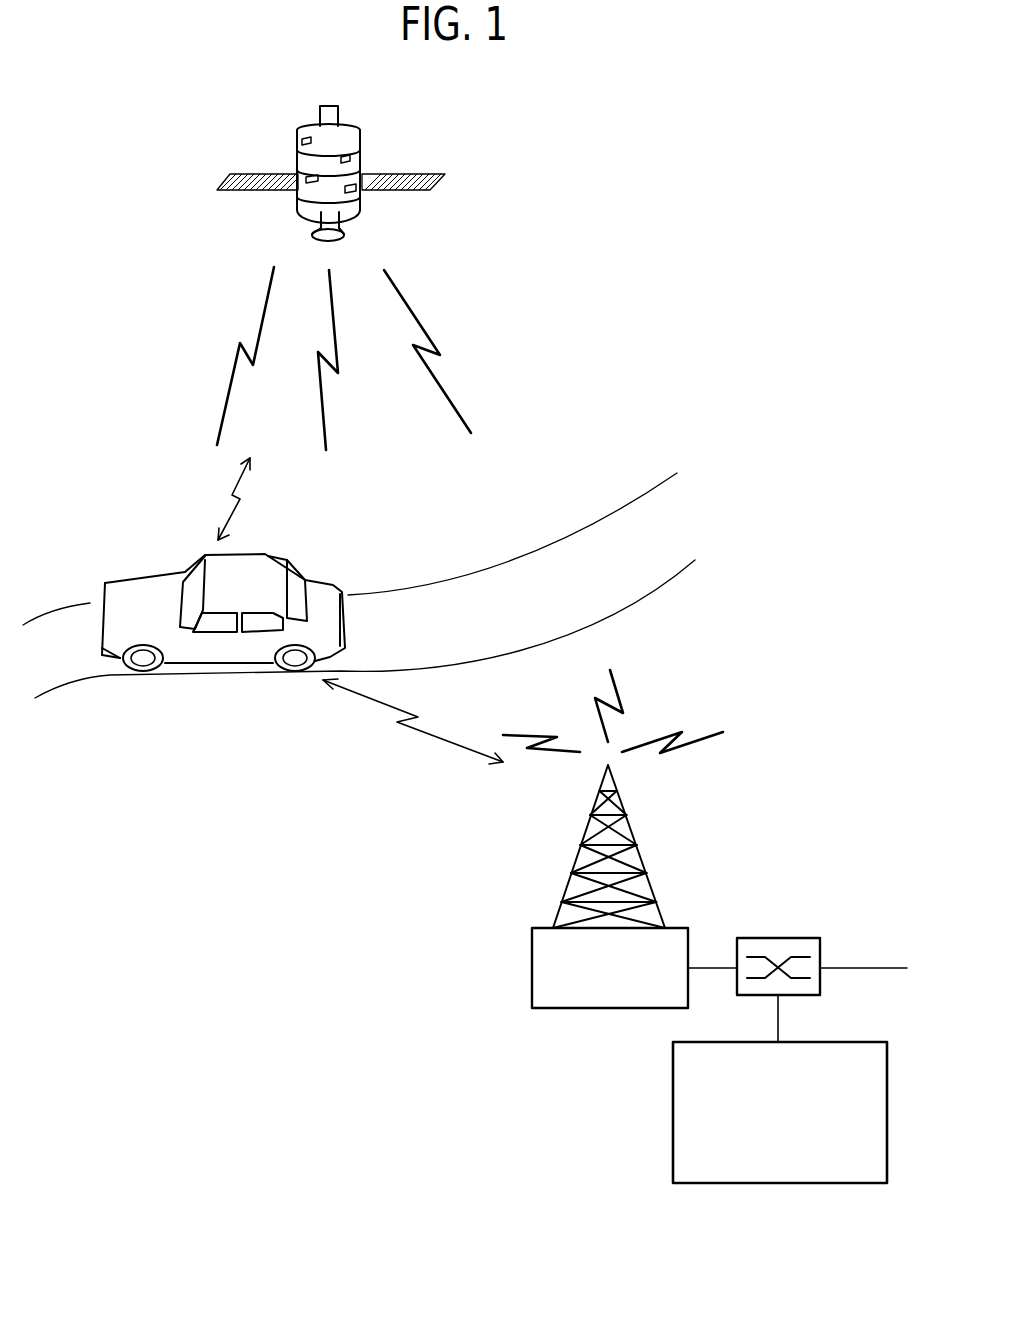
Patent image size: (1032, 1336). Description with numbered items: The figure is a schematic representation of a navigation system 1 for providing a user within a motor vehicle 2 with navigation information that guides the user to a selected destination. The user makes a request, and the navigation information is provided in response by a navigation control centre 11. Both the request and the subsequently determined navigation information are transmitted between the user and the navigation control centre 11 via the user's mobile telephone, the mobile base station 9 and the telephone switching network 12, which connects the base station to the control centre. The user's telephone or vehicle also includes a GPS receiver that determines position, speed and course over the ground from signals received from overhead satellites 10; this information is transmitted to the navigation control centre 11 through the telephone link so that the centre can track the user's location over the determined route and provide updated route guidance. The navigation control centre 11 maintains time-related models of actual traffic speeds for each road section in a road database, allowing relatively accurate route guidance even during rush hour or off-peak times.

The navigation system 1 is at (589, 227).
The motor vehicle 2 is at (268, 568).
The mobile base station 9 is at (532, 968).
The overhead satellites 10 is at (300, 127).
The navigation control centre 11 is at (785, 1185).
The telephone switching network 12 is at (777, 938).